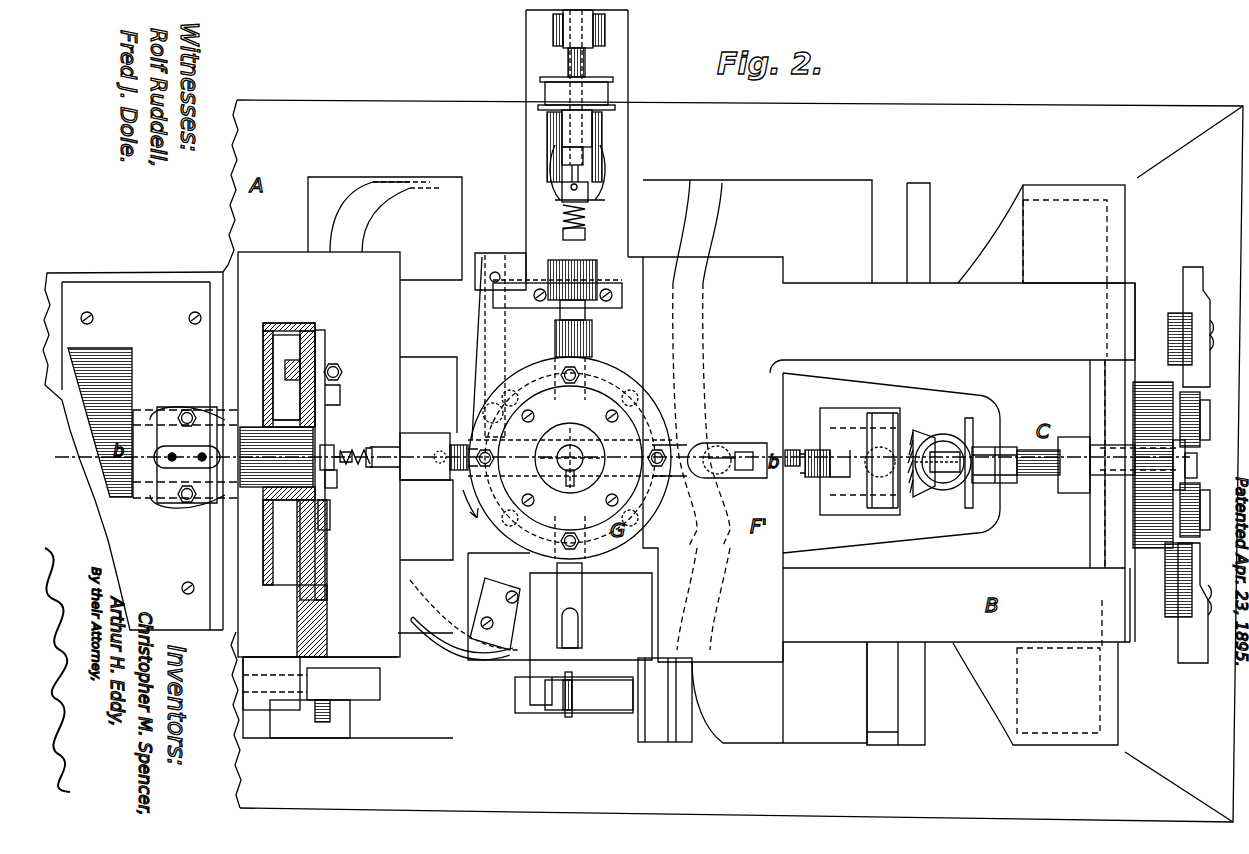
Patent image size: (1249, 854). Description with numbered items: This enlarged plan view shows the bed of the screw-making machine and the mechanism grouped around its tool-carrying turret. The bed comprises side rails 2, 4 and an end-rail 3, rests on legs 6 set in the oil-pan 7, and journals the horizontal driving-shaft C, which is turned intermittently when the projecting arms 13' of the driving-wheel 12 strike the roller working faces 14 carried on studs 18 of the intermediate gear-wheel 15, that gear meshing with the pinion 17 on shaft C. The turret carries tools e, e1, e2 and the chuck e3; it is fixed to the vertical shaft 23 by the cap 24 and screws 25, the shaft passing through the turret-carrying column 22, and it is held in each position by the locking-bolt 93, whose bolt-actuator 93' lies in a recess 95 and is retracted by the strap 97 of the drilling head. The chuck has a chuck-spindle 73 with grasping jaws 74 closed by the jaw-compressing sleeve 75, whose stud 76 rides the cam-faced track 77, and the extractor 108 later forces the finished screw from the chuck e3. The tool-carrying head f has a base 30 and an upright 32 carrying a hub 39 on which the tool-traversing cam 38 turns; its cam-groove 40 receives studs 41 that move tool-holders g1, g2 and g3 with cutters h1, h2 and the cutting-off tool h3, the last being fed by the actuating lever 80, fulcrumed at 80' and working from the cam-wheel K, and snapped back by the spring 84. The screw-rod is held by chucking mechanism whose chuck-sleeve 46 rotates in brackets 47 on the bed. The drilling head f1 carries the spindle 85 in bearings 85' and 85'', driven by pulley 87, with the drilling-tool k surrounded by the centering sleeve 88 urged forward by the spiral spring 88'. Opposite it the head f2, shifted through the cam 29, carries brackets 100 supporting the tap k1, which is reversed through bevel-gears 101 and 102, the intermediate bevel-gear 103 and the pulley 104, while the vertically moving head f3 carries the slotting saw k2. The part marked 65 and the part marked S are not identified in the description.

The oil-pan 7 is at (930, 114).
The bracket 65 is at (105, 360).
The bracket 47 is at (150, 462).
The base 30 is at (319, 454).
The cam-wheel K is at (425, 185).
The cam-faced track 77 is at (426, 520).
The chuck e3 is at (432, 433).
The stud 76 is at (437, 461).
The jaw-compressing sleeve 75 is at (445, 478).
The chuck-spindle 73 is at (467, 478).
The actuating lever 80 is at (348, 685).
The fulcrum 80' is at (294, 713).
The extractor 108 is at (447, 640).
The hub 39 is at (276, 457).
The tool-traversing cam 38 is at (283, 340).
The studs 41 is at (273, 355).
The cam-groove 40 is at (273, 380).
The tool-carrying head f is at (324, 460).
The tool-holder g1 is at (340, 358).
The cutting-tool h1 is at (334, 392).
The tool-holder g2 is at (330, 455).
The cutting-tool h2 is at (340, 480).
The cutting-off tool h3 is at (330, 512).
The spring S is at (352, 448).
The screw-blank-grasping jaws 74 is at (370, 448).
The chuck-sleeve 46 is at (268, 492).
The upright 32 is at (268, 585).
The spring 84 is at (327, 560).
The tool-holder g3 is at (327, 636).
The bearing 85' is at (594, 146).
The spindle 85 is at (592, 62).
The pulley 87 is at (602, 93).
The journal-bearing 85'' is at (544, 148).
The drilling-tool k is at (580, 180).
The tool-carrying head f1 is at (584, 183).
The spiral spring 88' is at (557, 217).
The centering sleeve 88 is at (589, 234).
The recess 95 is at (500, 258).
The bolt-actuator 93' is at (525, 261).
The strap 97 is at (512, 304).
The tool e2 is at (581, 338).
The cap 24 is at (600, 405).
The turret-carrying column 22 is at (615, 440).
The screws 25 is at (525, 408).
The vertical shaft 23 is at (570, 458).
The locking-bolt 93 is at (465, 404).
The tool e is at (560, 606).
The tool-carrying head f3 is at (574, 686).
The slotting saw k2 is at (568, 717).
The tool e1 is at (735, 447).
The tap k1 is at (790, 468).
The side rail 2 is at (936, 296).
The turret-carriage-reciprocating cam 29 is at (780, 183).
The side rail 4 is at (847, 633).
The leg 6 is at (1039, 465).
The horizontal shaft C is at (1032, 460).
The end-rail 3 is at (1085, 533).
The pinion 17 is at (1130, 485).
The tool-carrying head f2 is at (829, 463).
The brackets 100 is at (1005, 447).
The pulley 104 is at (882, 508).
The bevel-gear 101 is at (920, 430).
The intermediate bevel-gear 103 is at (940, 495).
The bevel-gear 102 is at (972, 420).
The intermediate gear-wheel 15 is at (1148, 390).
The driving-wheel 12 is at (1168, 344).
The working faces 14 is at (1188, 396).
The studs 18 is at (1205, 420).
The projecting arms 13' is at (1207, 465).